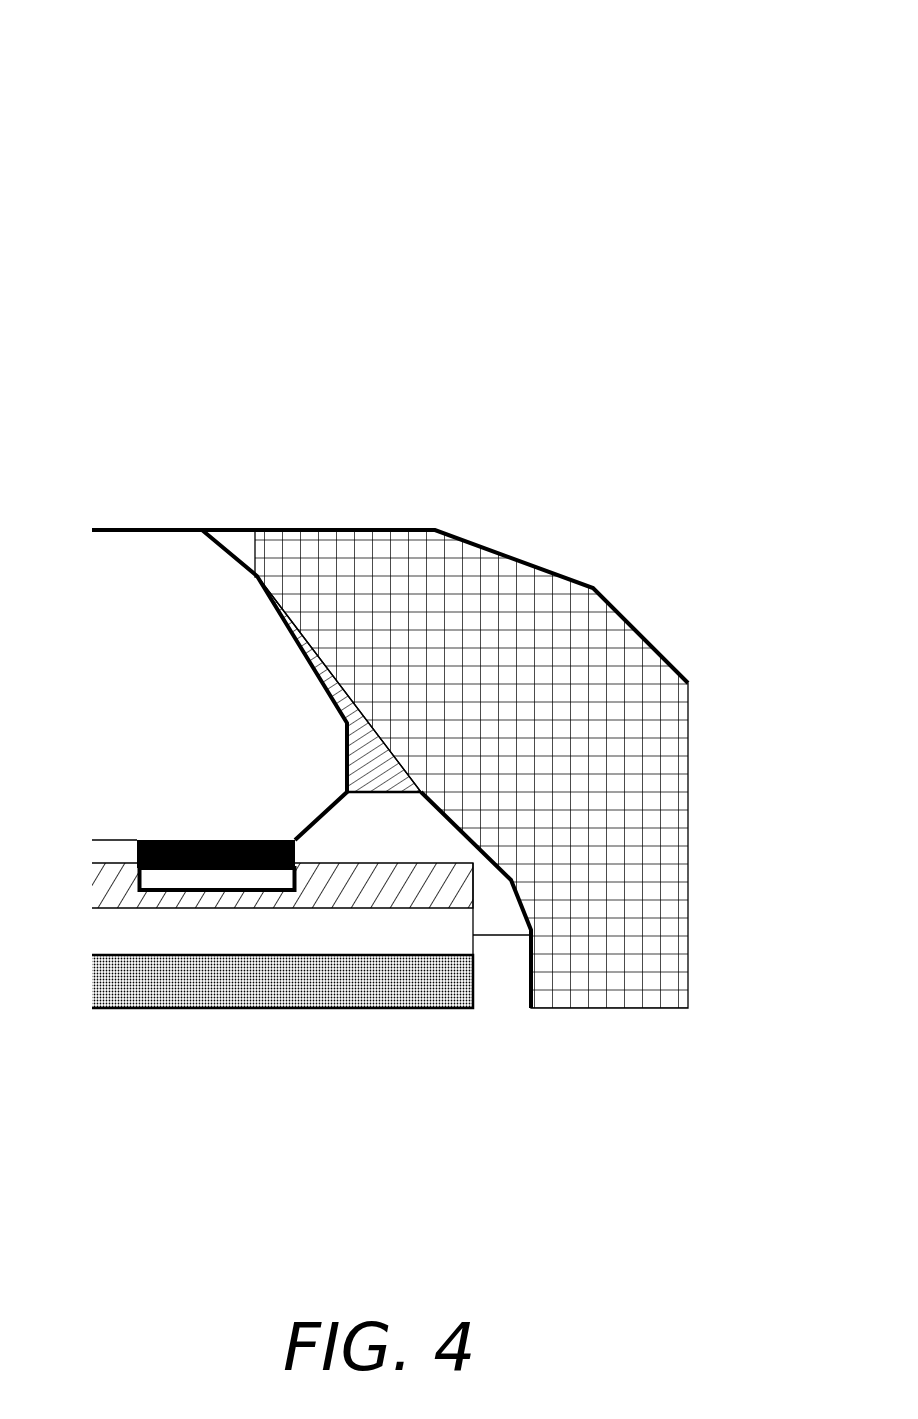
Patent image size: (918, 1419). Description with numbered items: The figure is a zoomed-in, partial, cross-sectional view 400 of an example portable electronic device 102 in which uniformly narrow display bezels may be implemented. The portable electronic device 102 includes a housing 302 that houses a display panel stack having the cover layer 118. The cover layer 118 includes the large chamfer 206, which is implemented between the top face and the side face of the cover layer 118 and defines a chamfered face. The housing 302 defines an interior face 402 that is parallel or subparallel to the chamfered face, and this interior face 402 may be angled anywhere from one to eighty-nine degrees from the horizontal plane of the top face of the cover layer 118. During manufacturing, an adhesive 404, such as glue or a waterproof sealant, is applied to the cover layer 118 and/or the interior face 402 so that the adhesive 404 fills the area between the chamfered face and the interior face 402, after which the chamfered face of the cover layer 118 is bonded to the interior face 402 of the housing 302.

The cross-sectional view 400 is at (716, 40).
The portable electronic device 102 is at (418, 530).
The cover layer 118 is at (140, 530).
The large chamfer 206 is at (322, 680).
The housing 302 is at (483, 547).
The interior face 402 is at (405, 753).
The adhesive 404 is at (360, 742).